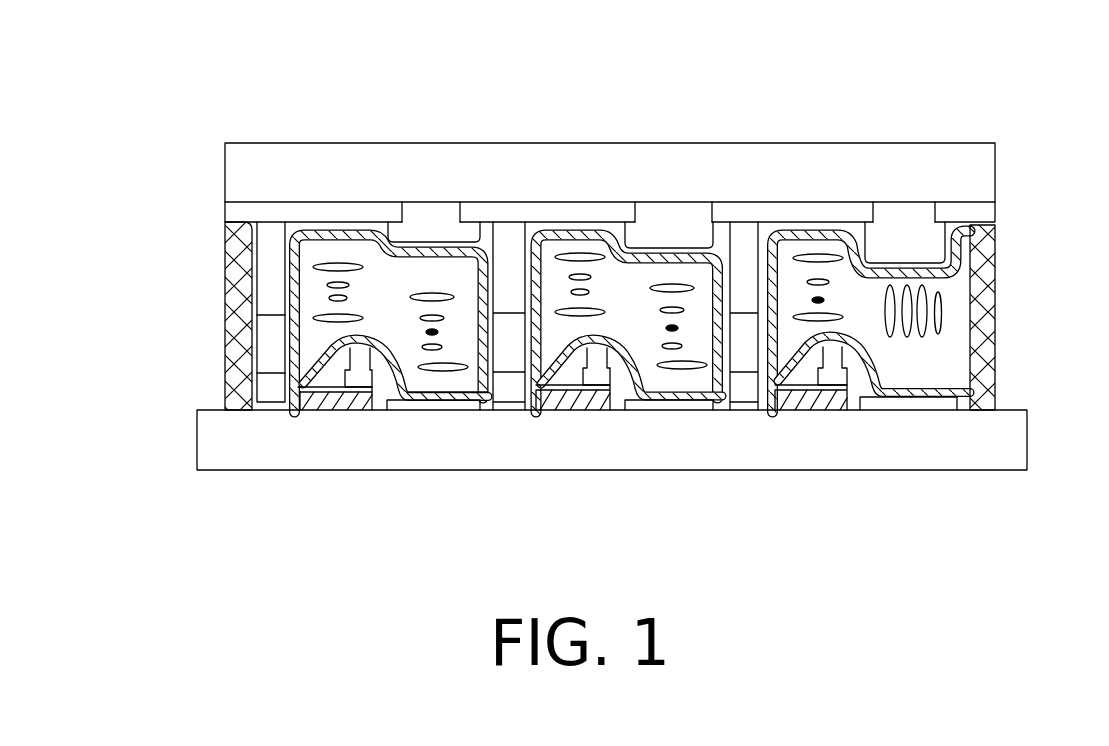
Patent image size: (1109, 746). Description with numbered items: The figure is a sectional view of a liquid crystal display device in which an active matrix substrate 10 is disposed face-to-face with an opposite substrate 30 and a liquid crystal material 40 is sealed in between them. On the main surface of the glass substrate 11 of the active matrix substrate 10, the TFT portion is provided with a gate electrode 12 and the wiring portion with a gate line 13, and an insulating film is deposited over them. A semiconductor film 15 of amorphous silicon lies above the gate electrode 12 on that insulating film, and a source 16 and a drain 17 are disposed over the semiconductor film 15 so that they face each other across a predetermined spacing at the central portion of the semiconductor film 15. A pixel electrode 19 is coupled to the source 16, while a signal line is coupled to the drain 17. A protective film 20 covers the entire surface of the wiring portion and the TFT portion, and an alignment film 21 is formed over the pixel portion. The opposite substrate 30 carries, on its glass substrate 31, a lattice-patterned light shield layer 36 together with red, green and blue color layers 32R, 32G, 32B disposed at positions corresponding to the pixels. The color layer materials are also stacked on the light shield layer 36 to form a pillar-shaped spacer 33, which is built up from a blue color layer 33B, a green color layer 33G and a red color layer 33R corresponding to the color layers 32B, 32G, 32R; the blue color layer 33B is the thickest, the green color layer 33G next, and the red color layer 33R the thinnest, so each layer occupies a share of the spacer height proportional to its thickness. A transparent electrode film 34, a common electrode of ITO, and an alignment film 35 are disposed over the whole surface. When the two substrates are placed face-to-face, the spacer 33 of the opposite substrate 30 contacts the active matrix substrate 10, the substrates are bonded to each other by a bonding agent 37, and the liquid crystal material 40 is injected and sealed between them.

The active matrix substrate 10 is at (849, 479).
The glass substrate 11 is at (1018, 433).
The gate electrode 12 is at (360, 406).
The gate line 13 is at (318, 406).
The semiconductor film 15 is at (347, 386).
The source 16 is at (390, 398).
The drain 17 is at (330, 403).
The pixel electrode 19 is at (443, 408).
The protective film 20 is at (550, 410).
The alignment film 21 is at (467, 398).
The opposite substrate 30 is at (778, 137).
The glass substrate 31 is at (968, 158).
The red color layer 32R is at (432, 221).
The green color layer 32G is at (672, 224).
The blue color layer 32B is at (904, 221).
The pillar-shaped spacer 33 is at (130, 231).
The blue color layer of spacer 33B is at (262, 265).
The green color layer of spacer 33G is at (263, 335).
The red color layer of spacer 33R is at (263, 388).
The transparent electrode film 34 is at (529, 235).
The alignment film 35 is at (963, 232).
The light shield layer 36 is at (347, 212).
The bonding agent 37 is at (988, 367).
The liquid crystal material 40 is at (952, 315).